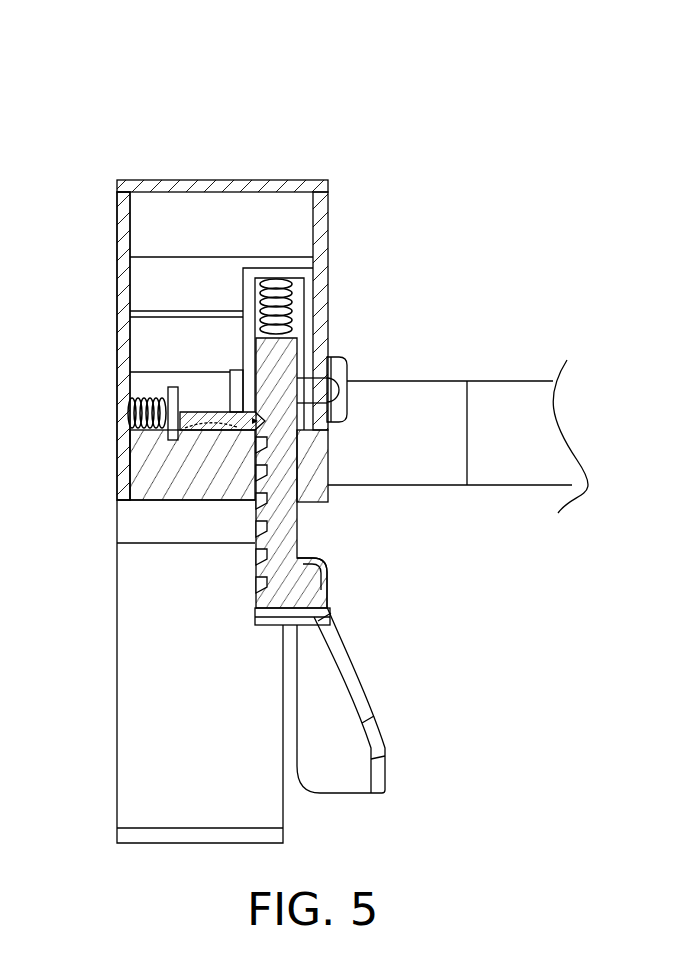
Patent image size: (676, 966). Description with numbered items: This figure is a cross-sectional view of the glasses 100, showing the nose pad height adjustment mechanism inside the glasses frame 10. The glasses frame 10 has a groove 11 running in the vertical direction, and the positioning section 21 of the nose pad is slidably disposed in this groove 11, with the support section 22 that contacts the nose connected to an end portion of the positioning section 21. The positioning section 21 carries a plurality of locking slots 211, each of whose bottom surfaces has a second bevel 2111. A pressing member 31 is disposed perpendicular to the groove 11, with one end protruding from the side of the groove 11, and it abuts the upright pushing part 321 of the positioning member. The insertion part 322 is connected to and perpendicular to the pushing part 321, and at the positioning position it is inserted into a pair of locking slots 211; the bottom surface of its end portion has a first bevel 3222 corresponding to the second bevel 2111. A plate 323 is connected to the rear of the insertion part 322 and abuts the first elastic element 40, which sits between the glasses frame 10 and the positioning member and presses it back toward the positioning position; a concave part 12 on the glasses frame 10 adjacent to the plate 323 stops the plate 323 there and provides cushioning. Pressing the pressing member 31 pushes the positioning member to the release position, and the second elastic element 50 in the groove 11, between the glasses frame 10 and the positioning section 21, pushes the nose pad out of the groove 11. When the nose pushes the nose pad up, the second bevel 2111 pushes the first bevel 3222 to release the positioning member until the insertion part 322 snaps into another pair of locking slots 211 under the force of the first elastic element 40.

The glasses 100 is at (514, 94).
The glasses frame 10 is at (302, 180).
The groove 11 is at (308, 282).
The concave part 12 is at (117, 431).
The positioning section 21 is at (284, 347).
The locking slots 211 is at (270, 535).
The second bevel 2111 is at (268, 508).
The support section 22 is at (352, 735).
The pressing member 31 is at (339, 368).
The pushing part 321 is at (205, 412).
The insertion part 322 is at (175, 437).
The first bevel 3222 is at (205, 427).
The plate 323 is at (230, 380).
The first elastic element 40 is at (130, 402).
The second elastic element 50 is at (296, 291).